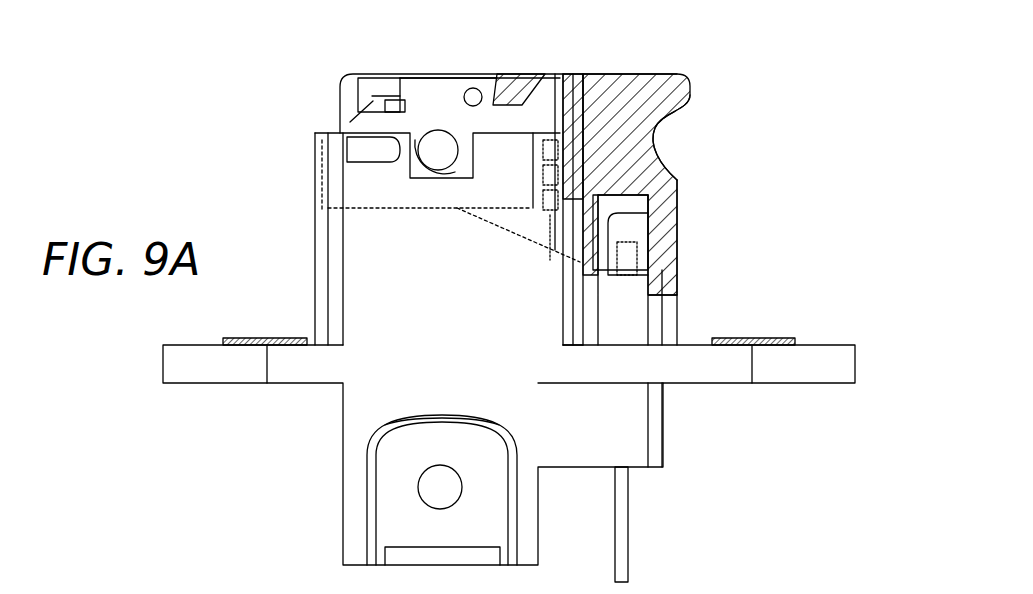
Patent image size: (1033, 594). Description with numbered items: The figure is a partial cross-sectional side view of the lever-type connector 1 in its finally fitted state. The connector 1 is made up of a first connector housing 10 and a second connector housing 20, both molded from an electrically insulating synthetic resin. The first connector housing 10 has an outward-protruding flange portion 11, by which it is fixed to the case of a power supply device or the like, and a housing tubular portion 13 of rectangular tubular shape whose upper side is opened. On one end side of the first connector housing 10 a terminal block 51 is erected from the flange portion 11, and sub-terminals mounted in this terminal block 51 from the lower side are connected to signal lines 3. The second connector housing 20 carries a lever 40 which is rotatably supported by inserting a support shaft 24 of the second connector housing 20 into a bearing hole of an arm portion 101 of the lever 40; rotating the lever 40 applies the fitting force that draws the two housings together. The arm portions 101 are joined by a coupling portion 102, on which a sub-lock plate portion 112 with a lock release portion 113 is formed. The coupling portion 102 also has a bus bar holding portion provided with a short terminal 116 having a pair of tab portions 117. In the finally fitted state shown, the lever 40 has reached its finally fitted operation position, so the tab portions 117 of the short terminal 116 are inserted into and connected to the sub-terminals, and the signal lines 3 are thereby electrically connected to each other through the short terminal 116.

The connector 1 is at (245, 190).
The signal lines 3 is at (630, 522).
The first connector housing 10 is at (316, 412).
The flange portion 11 is at (183, 377).
The housing tubular portion 13 is at (357, 281).
The second connector housing 20 is at (337, 107).
The support shaft 24 is at (437, 140).
The lever 40 is at (690, 72).
The terminal block 51 is at (665, 207).
The arm portion 101 is at (467, 80).
The coupling portion 102 is at (650, 128).
The sub-lock plate portion 112 is at (570, 73).
The lock release portion 113 is at (497, 86).
The short terminal 116 is at (680, 193).
The tab portion 117 is at (680, 258).